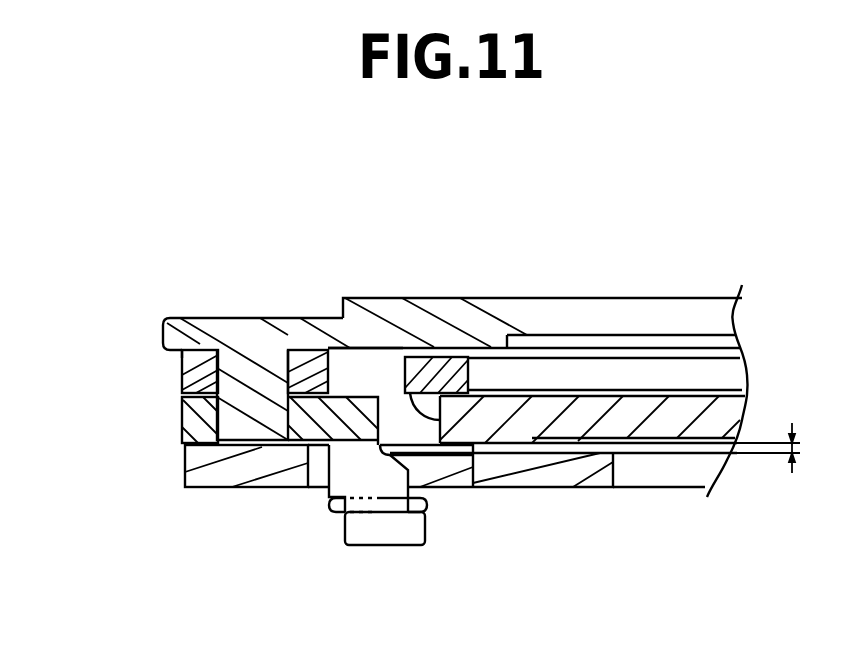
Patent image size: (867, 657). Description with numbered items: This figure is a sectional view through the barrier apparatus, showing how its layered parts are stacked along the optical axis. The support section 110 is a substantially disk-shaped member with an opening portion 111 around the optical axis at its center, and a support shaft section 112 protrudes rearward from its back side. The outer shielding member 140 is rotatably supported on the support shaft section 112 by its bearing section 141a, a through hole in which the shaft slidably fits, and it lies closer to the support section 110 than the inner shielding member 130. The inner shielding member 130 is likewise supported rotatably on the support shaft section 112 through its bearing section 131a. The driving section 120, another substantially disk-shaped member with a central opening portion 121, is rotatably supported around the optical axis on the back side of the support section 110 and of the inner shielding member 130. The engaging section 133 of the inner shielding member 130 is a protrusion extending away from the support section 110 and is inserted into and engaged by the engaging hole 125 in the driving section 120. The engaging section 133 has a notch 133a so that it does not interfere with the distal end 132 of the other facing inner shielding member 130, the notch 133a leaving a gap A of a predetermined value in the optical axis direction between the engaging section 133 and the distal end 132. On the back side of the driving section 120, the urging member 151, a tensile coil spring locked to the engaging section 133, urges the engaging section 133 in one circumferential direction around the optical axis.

The support section 110 is at (163, 335).
The opening portion 111 is at (510, 340).
The support shaft section 112 is at (202, 355).
The driving section 120 is at (185, 477).
The opening portion 121 is at (647, 485).
The engaging hole 125 is at (455, 487).
The inner shielding member 130 is at (181, 412).
The bearing section 131a is at (220, 417).
The distal end 132 is at (428, 357).
The engaging section 133 is at (373, 547).
The notch 133a is at (390, 445).
The outer shielding member 140 is at (181, 375).
The bearing section 141a is at (288, 368).
The urging member 151 is at (333, 512).
The gap A is at (798, 453).